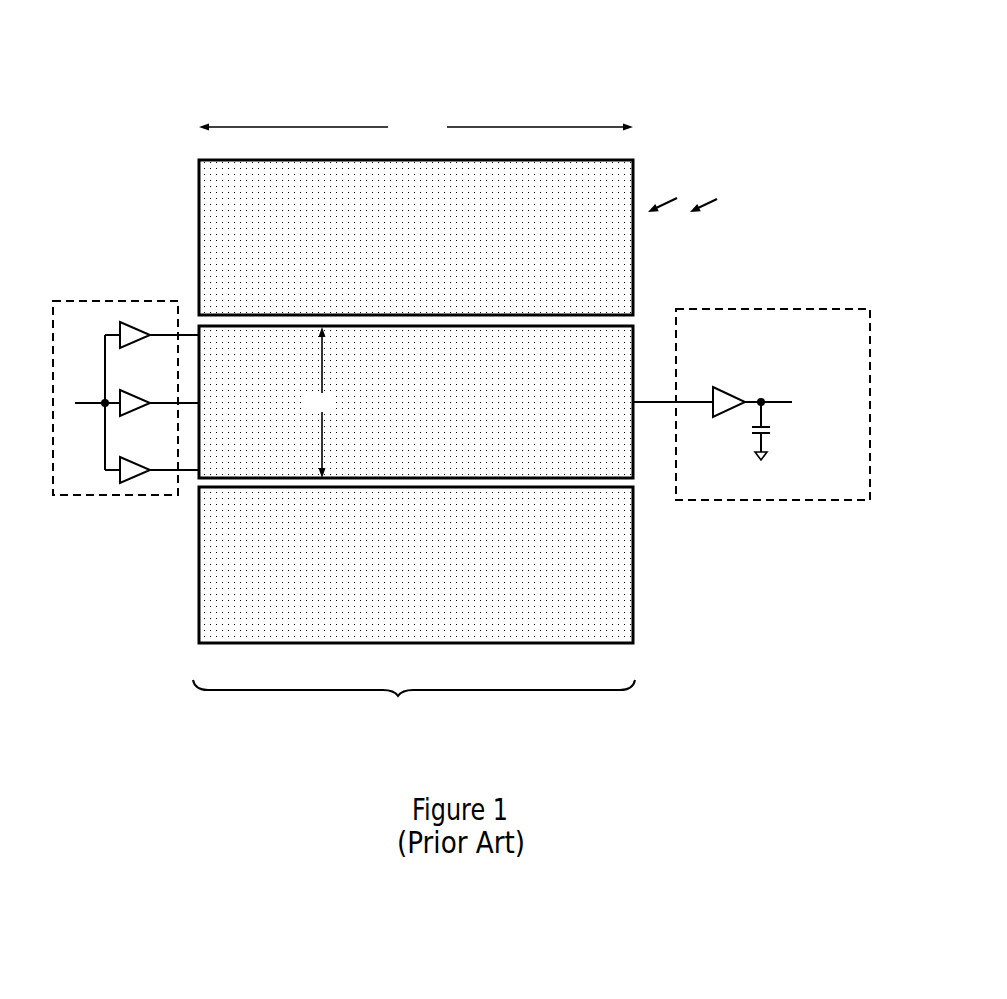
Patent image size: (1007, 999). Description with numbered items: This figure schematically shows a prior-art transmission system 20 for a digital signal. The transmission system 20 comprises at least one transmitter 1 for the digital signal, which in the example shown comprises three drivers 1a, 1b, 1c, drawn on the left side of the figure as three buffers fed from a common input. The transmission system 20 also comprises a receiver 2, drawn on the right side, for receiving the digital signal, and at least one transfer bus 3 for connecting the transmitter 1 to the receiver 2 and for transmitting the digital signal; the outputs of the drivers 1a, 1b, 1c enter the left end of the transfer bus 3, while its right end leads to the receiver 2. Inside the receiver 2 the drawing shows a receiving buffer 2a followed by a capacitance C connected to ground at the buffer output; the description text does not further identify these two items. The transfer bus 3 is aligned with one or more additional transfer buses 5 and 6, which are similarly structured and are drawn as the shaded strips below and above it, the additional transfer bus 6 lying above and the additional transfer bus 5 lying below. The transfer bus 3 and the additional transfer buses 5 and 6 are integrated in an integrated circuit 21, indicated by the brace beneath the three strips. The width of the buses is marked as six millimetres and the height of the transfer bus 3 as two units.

The transmission system 20 is at (624, 95).
The integrated circuit 21 is at (414, 712).
The transmitter 1 is at (137, 312).
The driver 1a is at (148, 329).
The driver 1b is at (159, 389).
The driver 1c is at (159, 457).
The receiver 2 is at (826, 337).
The receiver buffer 2a is at (752, 382).
The load capacitor C is at (778, 431).
The additional transfer bus 6 is at (416, 237).
The transfer bus 3 is at (416, 402).
The additional transfer bus 5 is at (416, 565).